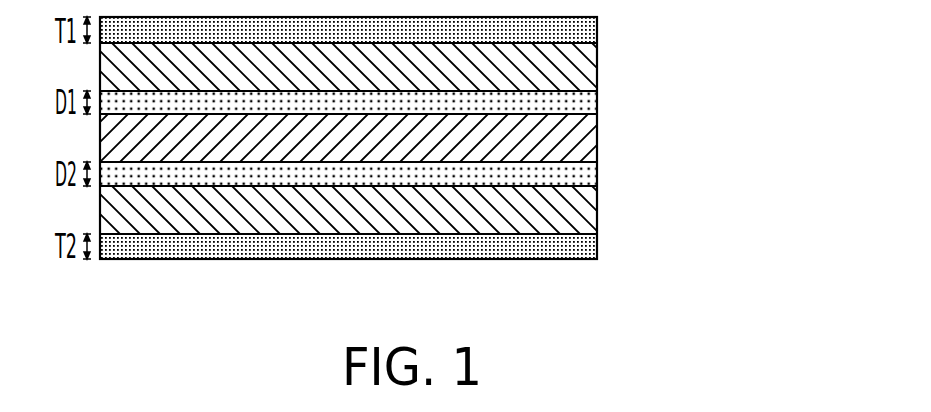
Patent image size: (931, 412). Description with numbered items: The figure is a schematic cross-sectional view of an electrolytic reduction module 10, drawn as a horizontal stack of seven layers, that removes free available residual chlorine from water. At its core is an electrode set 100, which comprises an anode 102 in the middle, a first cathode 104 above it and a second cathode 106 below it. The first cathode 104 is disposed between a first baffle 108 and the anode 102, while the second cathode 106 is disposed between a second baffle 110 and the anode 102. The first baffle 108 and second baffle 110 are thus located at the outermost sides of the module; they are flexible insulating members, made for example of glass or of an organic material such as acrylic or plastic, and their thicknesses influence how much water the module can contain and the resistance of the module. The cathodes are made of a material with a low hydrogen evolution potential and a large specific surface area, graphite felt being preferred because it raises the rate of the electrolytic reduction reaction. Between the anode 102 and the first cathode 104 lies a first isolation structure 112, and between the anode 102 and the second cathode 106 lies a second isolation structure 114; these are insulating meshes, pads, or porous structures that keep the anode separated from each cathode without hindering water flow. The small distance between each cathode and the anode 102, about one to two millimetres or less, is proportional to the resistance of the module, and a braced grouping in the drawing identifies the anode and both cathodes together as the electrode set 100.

The electrolytic reduction module 10 is at (790, 319).
The electrode set 100 is at (765, 62).
The anode 102 is at (586, 142).
The first cathode 104 is at (586, 68).
The second cathode 106 is at (586, 210).
The first baffle 108 is at (594, 31).
The second baffle 110 is at (594, 245).
The first isolation structure 112 is at (594, 102).
The second isolation structure 114 is at (594, 173).